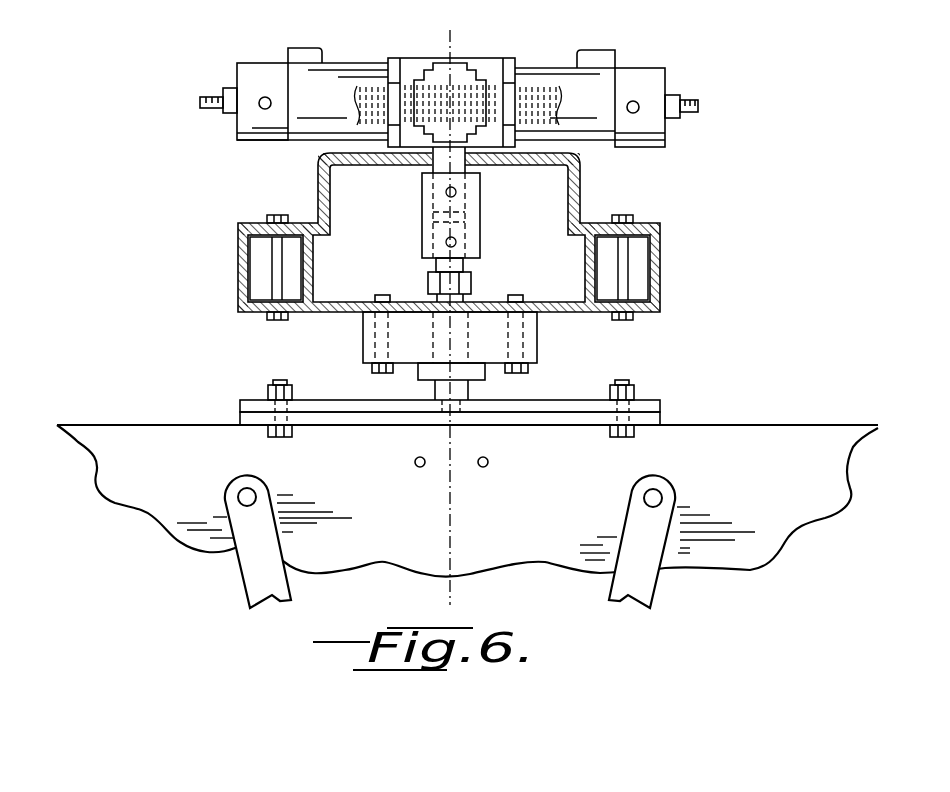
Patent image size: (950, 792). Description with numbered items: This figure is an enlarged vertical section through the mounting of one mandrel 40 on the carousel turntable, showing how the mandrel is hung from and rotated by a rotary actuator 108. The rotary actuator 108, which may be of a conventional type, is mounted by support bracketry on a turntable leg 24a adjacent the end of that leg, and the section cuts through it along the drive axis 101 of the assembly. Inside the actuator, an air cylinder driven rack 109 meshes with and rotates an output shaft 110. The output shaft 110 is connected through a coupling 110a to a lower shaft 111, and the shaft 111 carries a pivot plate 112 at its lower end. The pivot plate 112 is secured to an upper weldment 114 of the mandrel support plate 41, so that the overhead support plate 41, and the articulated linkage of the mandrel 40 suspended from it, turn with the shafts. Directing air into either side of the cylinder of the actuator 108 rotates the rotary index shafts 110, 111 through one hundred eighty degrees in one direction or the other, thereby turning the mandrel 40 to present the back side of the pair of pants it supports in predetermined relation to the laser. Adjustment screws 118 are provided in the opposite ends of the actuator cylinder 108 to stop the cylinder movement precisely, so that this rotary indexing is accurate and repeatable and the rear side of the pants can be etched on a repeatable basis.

The drive axis centerline 101 is at (423, 302).
The rotary actuator 108 is at (597, 83).
The air cylinder driven rack 109 is at (548, 42).
The output shaft 110 is at (477, 168).
The coupling 110a is at (423, 202).
The shaft 111 is at (432, 392).
The pivot plate 112 is at (650, 400).
The upper weldment 114 is at (662, 420).
The adjustment screws 118 is at (230, 105).
The turntable leg 24a is at (238, 270).
The mandrel 40 is at (165, 412).
The support plate 41 is at (545, 530).